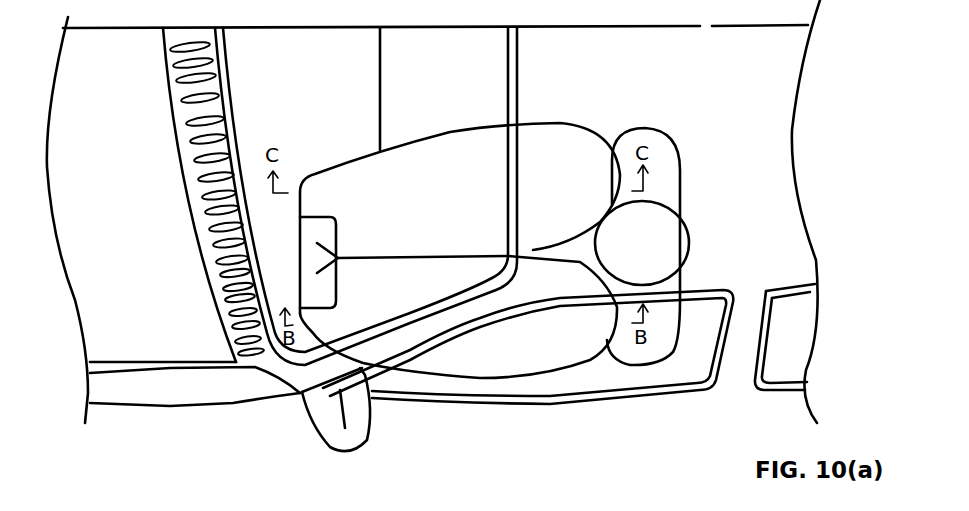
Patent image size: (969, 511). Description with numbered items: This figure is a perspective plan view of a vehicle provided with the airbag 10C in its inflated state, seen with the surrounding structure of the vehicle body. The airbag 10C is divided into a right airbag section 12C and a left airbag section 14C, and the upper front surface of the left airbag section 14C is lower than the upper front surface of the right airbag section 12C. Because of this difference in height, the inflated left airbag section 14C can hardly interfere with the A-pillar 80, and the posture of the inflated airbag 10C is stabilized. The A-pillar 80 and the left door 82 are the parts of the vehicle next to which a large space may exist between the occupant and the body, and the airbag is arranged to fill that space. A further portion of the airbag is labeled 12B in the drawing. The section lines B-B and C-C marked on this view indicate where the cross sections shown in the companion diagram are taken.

The airbag 10C is at (575, 103).
The right airbag section 12C is at (585, 145).
The airbag (lower chamber) 12B is at (565, 353).
The A-pillar 80 is at (438, 327).
The left door 82 is at (578, 408).
The left airbag section 14C is at (543, 368).